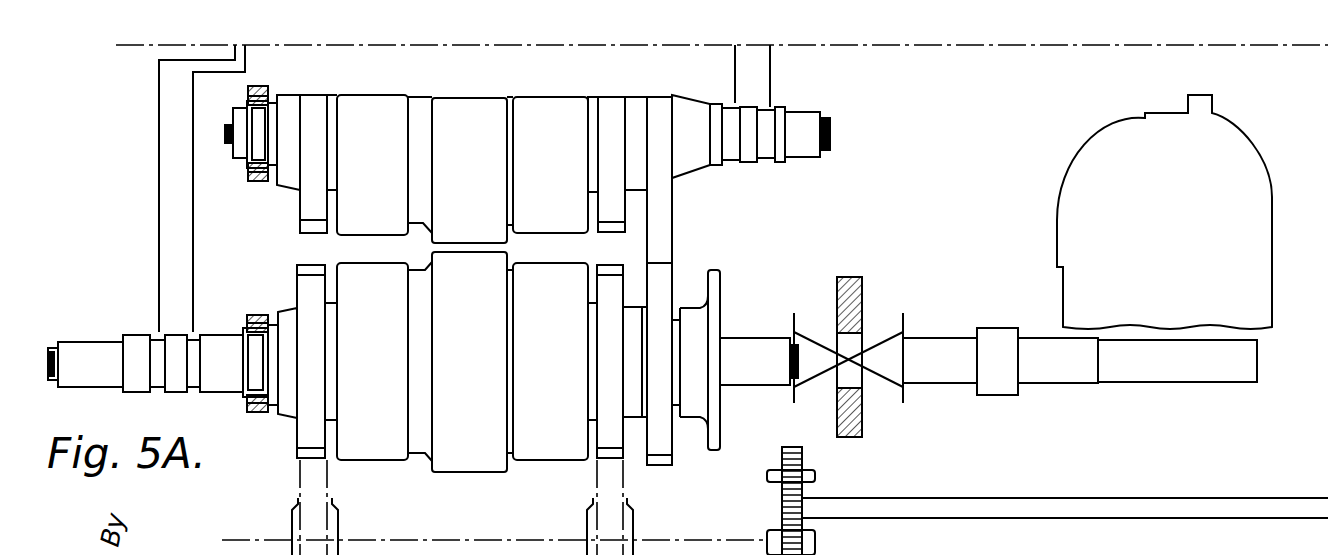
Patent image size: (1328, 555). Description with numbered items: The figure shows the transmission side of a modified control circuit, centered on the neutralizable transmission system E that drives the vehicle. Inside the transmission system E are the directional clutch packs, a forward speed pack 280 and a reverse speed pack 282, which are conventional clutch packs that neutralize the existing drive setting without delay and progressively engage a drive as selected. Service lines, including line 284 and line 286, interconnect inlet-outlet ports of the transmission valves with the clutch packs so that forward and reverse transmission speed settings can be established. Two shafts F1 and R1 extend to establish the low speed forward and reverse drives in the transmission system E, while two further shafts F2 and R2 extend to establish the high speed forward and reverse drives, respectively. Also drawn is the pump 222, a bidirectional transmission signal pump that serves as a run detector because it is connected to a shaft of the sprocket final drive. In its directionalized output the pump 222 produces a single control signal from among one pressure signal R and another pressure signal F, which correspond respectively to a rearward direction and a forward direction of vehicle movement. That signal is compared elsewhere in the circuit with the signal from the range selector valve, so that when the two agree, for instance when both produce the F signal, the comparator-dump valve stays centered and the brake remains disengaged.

The pack 280 is at (350, 228).
The pack 282 is at (470, 457).
The line 284 is at (735, 63).
The line 286 is at (771, 70).
The pump 222 is at (792, 447).
The transmission system E is at (862, 288).
The shaft F1 is at (392, 170).
The shaft F2 is at (569, 175).
The shaft R1 is at (393, 343).
The shaft R2 is at (572, 337).
The pressure signal R is at (972, 489).
The pressure signal F is at (975, 528).